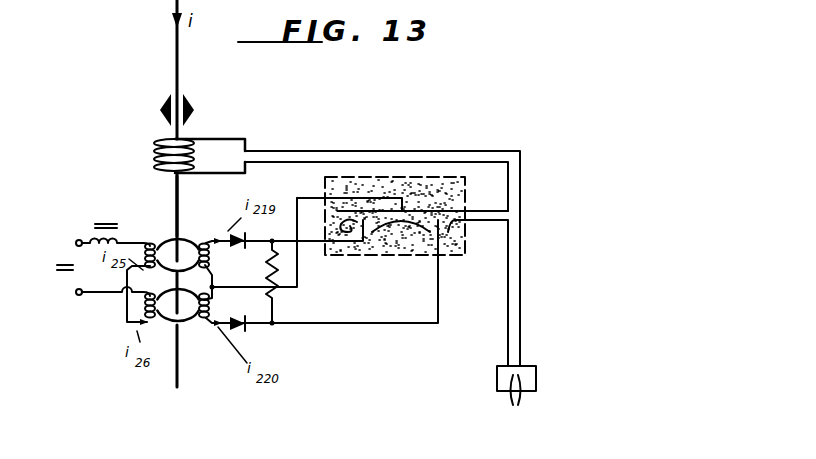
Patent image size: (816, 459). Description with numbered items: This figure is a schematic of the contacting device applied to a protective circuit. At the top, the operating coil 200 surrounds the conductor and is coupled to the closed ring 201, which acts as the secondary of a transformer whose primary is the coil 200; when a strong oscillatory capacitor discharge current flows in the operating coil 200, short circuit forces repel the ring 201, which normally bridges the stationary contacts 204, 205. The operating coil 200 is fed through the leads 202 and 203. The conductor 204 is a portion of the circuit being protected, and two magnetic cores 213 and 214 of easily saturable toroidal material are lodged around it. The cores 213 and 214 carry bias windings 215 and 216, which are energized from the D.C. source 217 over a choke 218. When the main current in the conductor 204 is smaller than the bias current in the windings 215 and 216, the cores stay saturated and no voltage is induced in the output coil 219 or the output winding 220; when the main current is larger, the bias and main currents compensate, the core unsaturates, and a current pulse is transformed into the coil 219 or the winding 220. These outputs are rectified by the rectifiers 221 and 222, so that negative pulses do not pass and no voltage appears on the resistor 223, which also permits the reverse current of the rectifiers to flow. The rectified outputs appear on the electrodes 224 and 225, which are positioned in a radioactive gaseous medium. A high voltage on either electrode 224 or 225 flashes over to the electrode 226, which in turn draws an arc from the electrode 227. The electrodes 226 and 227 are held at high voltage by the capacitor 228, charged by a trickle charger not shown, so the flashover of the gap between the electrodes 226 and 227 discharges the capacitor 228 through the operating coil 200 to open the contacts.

The operating coil 200 is at (188, 145).
The closed ring 201 is at (188, 104).
The lead 202 is at (293, 152).
The lead 203 is at (262, 163).
The stationary contact 204 is at (178, 197).
The stationary contact 205 is at (178, 66).
The magnetic core 213 is at (183, 239).
The magnetic core 214 is at (185, 322).
The bias winding 215 is at (150, 242).
The bias winding 216 is at (140, 297).
The D.C. source 217 is at (63, 272).
The choke 218 is at (104, 221).
The output coil 219 is at (208, 259).
The output winding 220 is at (208, 306).
The rectifier 221 is at (232, 237).
The rectifier 222 is at (240, 329).
The resistor 223 is at (280, 300).
The electrode 224 is at (340, 240).
The electrode 225 is at (439, 300).
The electrode 226 is at (485, 209).
The electrode 227 is at (485, 222).
The capacitor 228 is at (538, 378).